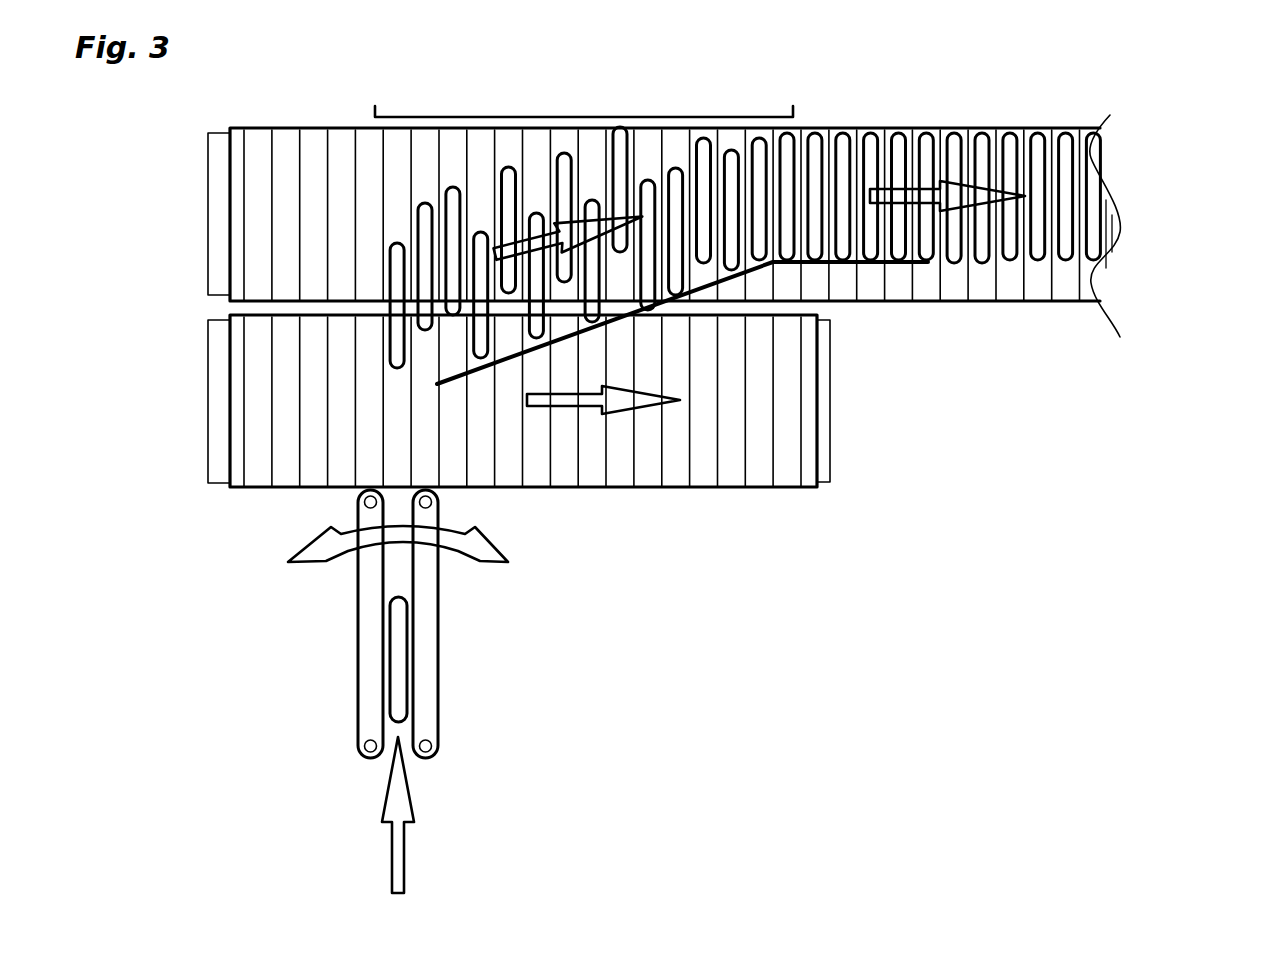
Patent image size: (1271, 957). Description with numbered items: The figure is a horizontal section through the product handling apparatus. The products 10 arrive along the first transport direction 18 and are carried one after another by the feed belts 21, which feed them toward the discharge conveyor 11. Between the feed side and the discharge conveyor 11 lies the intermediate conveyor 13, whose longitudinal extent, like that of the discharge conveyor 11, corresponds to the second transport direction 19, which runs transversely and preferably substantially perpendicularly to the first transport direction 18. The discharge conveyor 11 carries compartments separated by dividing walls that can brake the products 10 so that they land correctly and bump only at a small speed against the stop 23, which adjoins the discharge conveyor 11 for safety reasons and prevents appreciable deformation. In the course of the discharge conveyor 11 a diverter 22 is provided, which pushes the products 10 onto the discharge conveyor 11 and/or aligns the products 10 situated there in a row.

The product 10 is at (397, 652).
The discharge conveyor 11 is at (731, 197).
The intermediate conveyor 13 is at (902, 406).
The first transport direction 18 is at (398, 872).
The second transport direction 19 is at (897, 196).
The feed belt 21 is at (368, 603).
The diverter 22 is at (477, 372).
The stop 23 is at (540, 114).